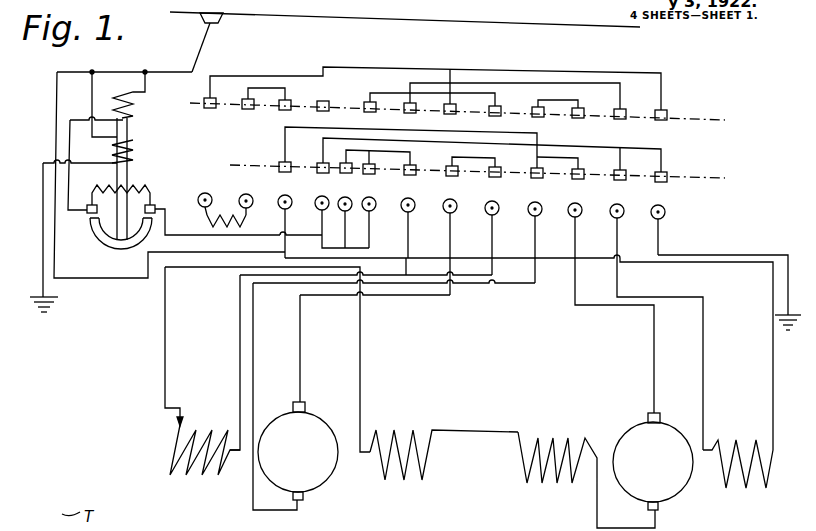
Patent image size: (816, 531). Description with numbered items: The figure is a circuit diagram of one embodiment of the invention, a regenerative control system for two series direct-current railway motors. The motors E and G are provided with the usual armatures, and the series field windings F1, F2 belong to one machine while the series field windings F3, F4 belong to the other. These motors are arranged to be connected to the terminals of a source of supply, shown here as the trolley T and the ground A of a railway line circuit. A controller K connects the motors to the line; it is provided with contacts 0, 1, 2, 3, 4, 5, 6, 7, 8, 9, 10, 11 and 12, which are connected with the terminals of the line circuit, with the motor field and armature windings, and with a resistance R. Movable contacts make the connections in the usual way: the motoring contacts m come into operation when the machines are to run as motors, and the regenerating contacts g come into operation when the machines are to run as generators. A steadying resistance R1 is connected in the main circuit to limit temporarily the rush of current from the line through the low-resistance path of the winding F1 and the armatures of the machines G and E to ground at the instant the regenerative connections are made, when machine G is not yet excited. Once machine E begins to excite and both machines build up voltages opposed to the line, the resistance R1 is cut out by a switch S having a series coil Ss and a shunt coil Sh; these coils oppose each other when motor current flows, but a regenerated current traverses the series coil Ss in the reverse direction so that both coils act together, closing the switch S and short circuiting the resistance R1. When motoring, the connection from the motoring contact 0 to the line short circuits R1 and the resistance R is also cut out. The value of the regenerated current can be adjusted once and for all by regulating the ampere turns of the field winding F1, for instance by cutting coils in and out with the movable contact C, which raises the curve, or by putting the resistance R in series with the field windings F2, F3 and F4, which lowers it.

The trolley terminal T is at (583, 28).
The series coil Ss is at (137, 105).
The shunt coil Sh is at (133, 162).
The steadying resistance R1 is at (142, 186).
The switch S is at (119, 248).
The ground terminal A is at (415, 259).
The resistance R is at (226, 214).
The controller K is at (480, 130).
The regenerating contacts g is at (467, 103).
The motoring contacts m is at (492, 160).
The controller contact 0 is at (345, 216).
The controller contact 1 is at (205, 197).
The controller contact 2 is at (246, 198).
The controller contact 3 is at (285, 220).
The controller contact 4 is at (342, 215).
The controller contact 5 is at (369, 216).
The controller contact 6 is at (408, 230).
The controller contact 7 is at (450, 240).
The controller contact 8 is at (492, 231).
The controller contact 9 is at (535, 236).
The controller contact 10 is at (610, 301).
The controller contact 11 is at (656, 320).
The controller contact 12 is at (658, 205).
The movable contact C is at (158, 426).
The series field winding F1 is at (205, 467).
The series field winding F2 is at (444, 472).
The series field winding F3 is at (586, 480).
The series field winding F4 is at (738, 477).
The motor E is at (298, 451).
The motor G is at (653, 461).